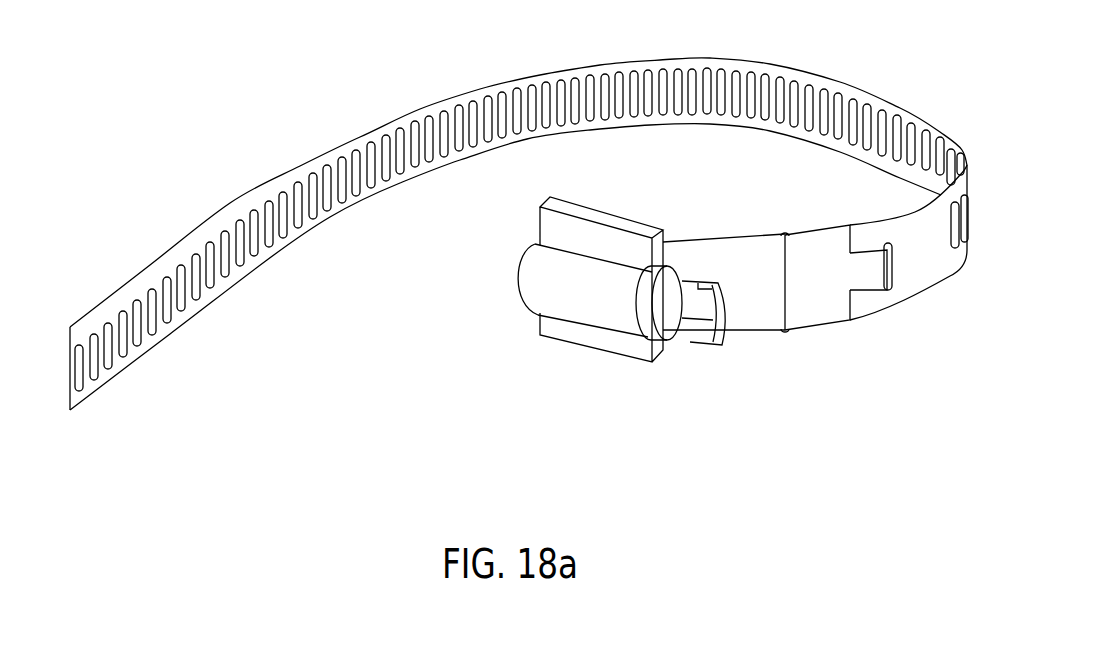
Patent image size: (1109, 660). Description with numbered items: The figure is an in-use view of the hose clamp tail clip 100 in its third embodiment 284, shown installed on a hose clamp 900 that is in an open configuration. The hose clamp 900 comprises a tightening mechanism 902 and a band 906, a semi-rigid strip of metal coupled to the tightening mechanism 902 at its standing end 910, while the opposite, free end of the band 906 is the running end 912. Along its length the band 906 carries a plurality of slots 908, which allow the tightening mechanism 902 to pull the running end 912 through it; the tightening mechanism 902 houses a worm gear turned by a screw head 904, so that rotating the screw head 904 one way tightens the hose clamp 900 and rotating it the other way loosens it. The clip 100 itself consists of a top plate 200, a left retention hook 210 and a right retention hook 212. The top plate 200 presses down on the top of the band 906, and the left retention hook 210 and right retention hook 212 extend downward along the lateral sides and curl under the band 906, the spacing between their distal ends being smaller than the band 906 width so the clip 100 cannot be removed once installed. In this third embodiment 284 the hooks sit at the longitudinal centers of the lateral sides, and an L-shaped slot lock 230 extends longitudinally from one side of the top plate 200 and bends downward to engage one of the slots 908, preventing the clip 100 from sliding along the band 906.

The hose clamp 900 is at (519, 205).
The band 906 is at (519, 205).
The plurality of slots 908 is at (336, 153).
The running end 912 is at (198, 316).
The standing end 910 is at (720, 252).
The tightening mechanism 902 is at (541, 293).
The screw head 904 is at (694, 350).
The hose clamp tail clip 100 is at (851, 287).
The third embodiment 284 is at (851, 287).
The top plate 200 is at (851, 287).
The right retention hook 212 is at (797, 232).
The left retention hook 210 is at (841, 327).
The slot lock 230 is at (878, 268).